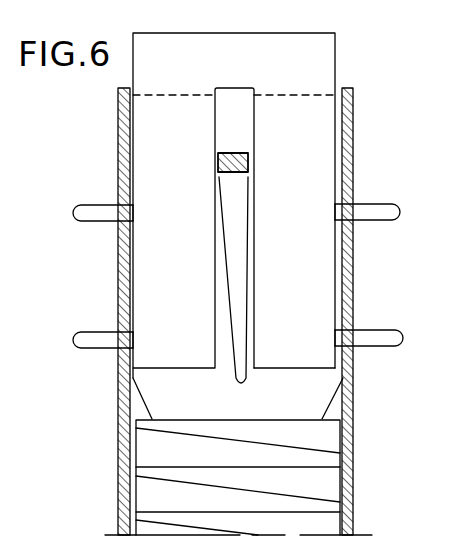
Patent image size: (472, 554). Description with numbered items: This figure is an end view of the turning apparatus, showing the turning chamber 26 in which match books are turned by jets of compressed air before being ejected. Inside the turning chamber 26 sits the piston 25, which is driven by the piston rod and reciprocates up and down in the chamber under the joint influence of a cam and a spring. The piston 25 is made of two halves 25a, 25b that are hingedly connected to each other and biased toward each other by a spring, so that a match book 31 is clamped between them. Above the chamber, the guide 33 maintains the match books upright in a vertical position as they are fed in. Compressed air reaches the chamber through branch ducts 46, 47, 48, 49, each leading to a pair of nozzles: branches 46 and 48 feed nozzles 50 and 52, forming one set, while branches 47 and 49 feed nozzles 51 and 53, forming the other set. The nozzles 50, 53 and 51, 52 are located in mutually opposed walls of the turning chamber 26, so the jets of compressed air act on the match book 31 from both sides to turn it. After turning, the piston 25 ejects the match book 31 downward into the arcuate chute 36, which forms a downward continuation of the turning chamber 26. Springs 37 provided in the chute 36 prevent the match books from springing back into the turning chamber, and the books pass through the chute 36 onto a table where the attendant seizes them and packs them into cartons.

The piston 25 is at (263, 30).
The piston half 25a is at (177, 360).
The piston half 25b is at (281, 356).
The turning chamber 26 is at (352, 130).
The match book 31 is at (240, 290).
The guide 33 is at (249, 162).
The arcuate chute 36 is at (133, 476).
The springs 37 is at (128, 398).
The branch duct 46 is at (97, 205).
The branch duct 47 is at (378, 204).
The branch duct 48 is at (386, 330).
The branch duct 49 is at (100, 332).
The nozzles 50 is at (133, 213).
The nozzles 51 is at (342, 213).
The nozzles 52 is at (345, 341).
The nozzles 53 is at (127, 341).